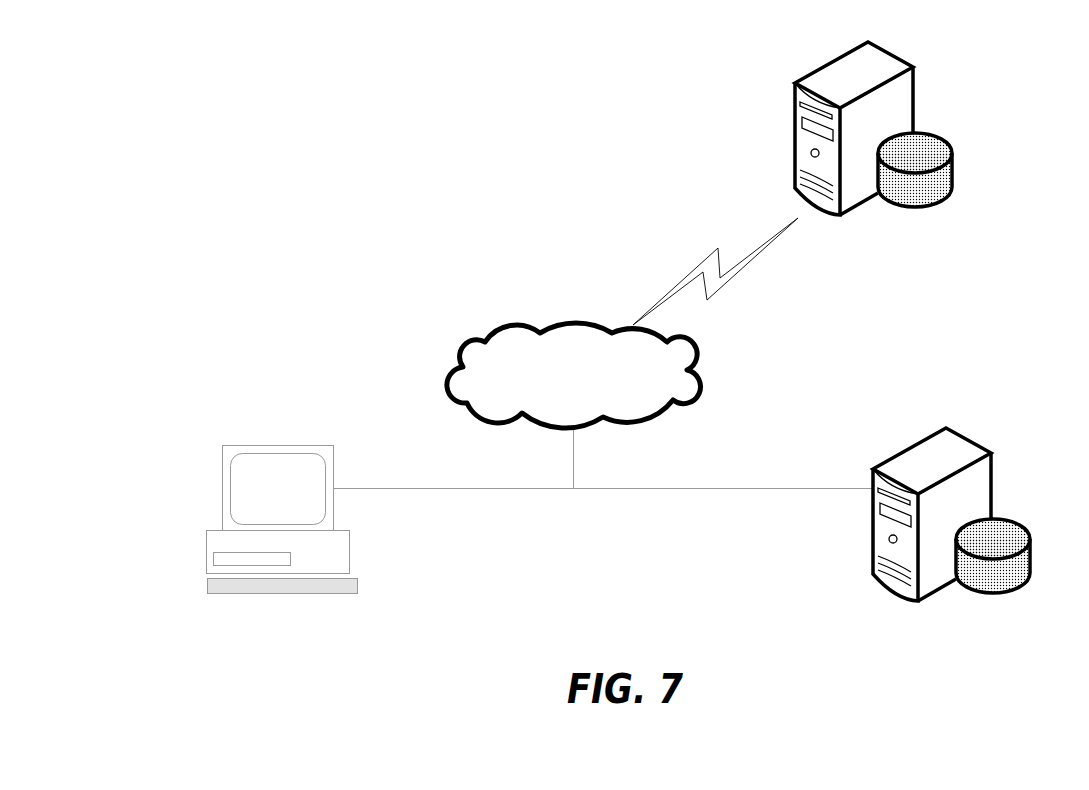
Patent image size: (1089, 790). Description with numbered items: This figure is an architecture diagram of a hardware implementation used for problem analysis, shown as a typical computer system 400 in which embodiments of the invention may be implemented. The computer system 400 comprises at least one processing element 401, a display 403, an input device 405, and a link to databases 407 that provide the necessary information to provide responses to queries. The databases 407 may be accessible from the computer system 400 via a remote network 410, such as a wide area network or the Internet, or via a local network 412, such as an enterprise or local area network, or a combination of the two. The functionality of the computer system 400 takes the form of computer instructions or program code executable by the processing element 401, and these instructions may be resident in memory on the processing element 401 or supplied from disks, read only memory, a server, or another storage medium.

The computer system 400 is at (242, 514).
The processing element 401 is at (220, 555).
The display 403 is at (292, 500).
The input device 405 is at (258, 590).
The databases 407 is at (926, 321).
The remote network 410 is at (586, 388).
The local network 412 is at (604, 477).